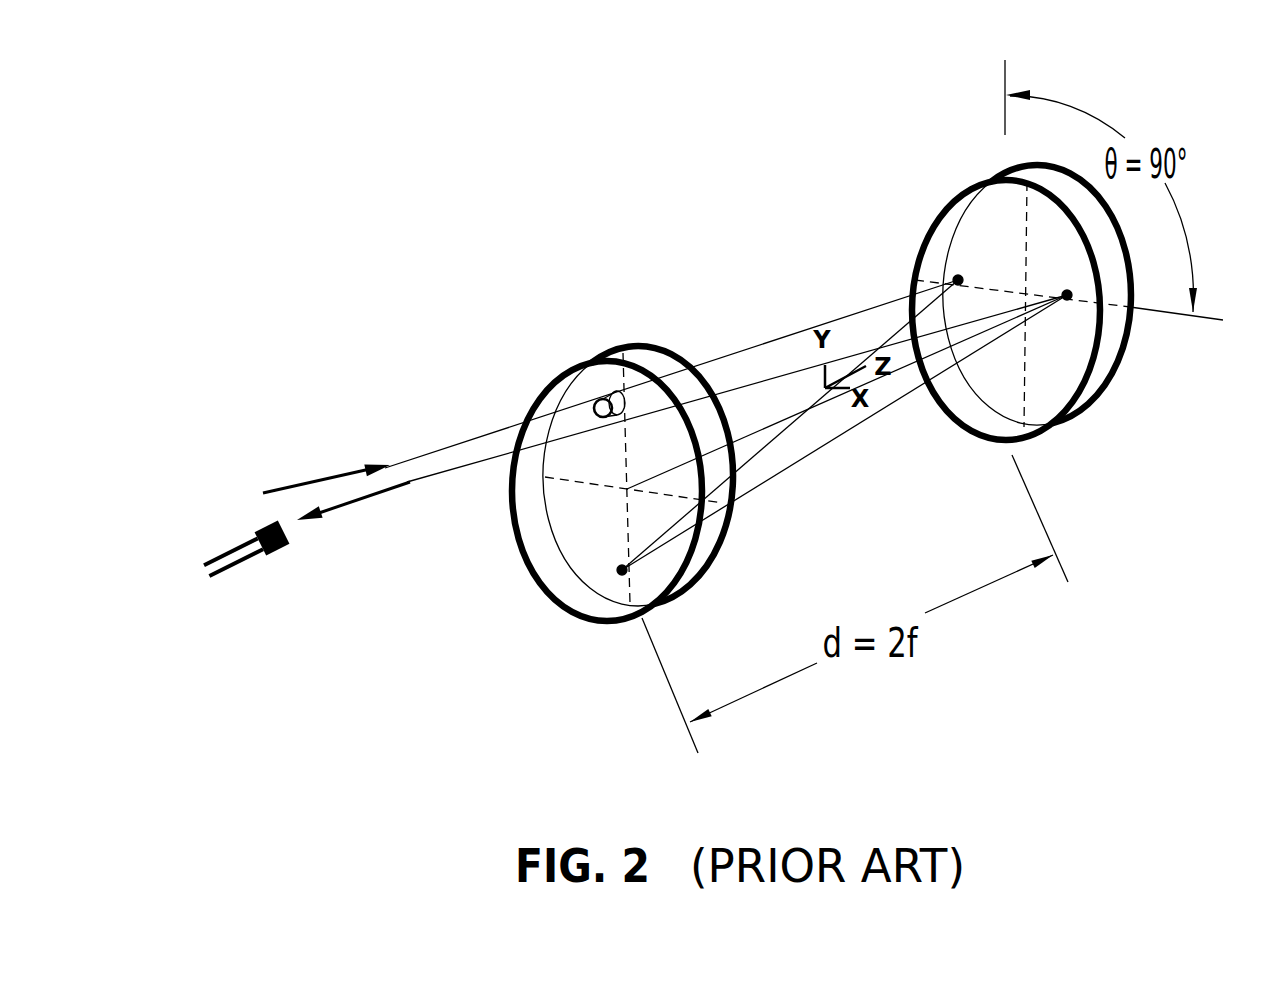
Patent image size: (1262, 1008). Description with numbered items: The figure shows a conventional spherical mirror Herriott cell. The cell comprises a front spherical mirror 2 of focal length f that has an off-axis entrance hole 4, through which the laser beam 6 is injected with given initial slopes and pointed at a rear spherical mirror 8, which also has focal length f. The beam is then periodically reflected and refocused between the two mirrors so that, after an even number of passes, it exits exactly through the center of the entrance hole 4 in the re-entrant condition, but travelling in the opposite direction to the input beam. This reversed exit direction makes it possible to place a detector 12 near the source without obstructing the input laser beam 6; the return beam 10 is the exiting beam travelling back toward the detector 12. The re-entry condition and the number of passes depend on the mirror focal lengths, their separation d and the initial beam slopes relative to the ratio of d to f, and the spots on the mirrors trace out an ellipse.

The front spherical mirror 2 is at (610, 342).
The off-axis entrance hole 4 is at (585, 397).
The laser beam 6 is at (422, 443).
The rear spherical mirror 8 is at (908, 250).
The return light beam 10 is at (318, 525).
The detector 12 is at (283, 560).